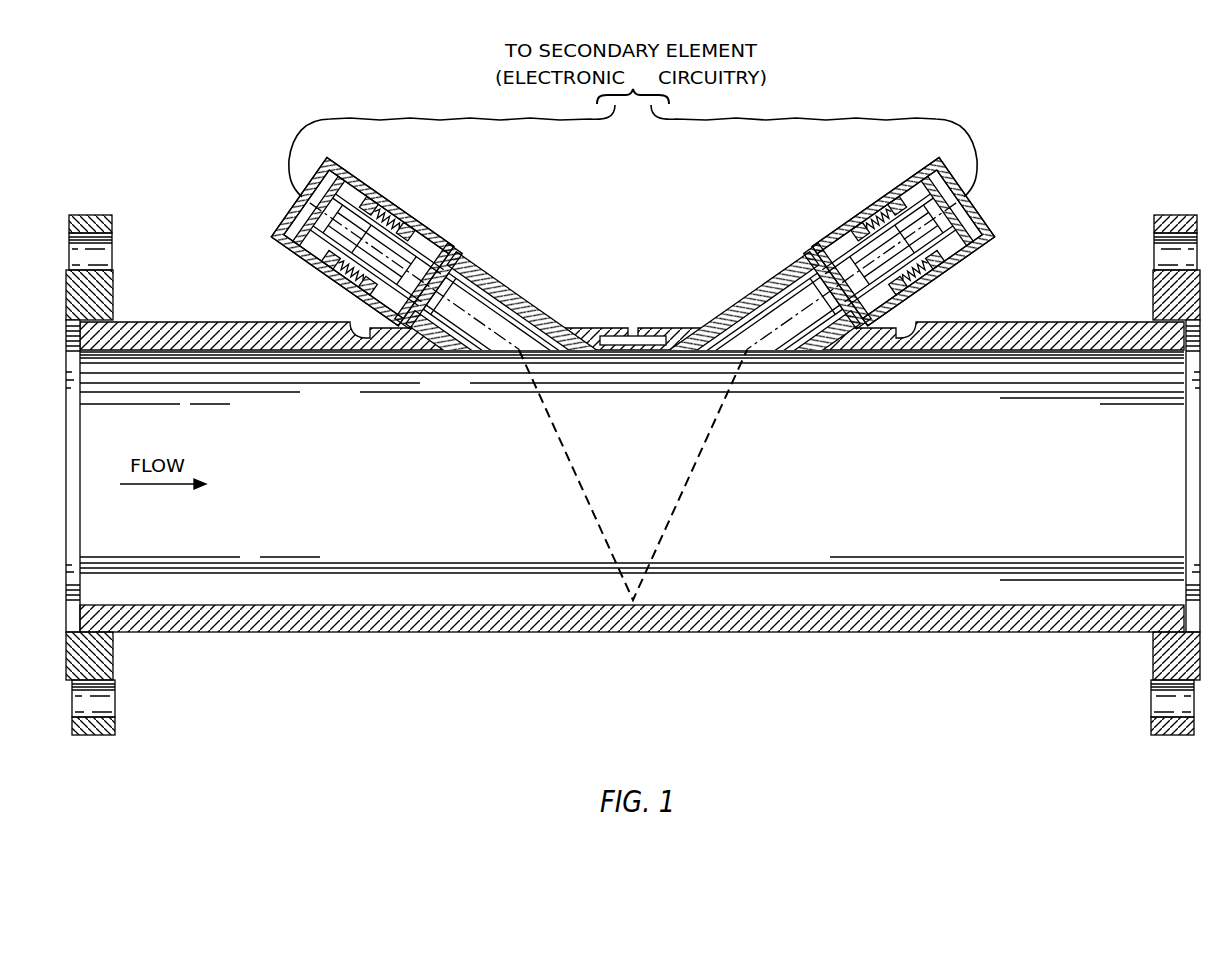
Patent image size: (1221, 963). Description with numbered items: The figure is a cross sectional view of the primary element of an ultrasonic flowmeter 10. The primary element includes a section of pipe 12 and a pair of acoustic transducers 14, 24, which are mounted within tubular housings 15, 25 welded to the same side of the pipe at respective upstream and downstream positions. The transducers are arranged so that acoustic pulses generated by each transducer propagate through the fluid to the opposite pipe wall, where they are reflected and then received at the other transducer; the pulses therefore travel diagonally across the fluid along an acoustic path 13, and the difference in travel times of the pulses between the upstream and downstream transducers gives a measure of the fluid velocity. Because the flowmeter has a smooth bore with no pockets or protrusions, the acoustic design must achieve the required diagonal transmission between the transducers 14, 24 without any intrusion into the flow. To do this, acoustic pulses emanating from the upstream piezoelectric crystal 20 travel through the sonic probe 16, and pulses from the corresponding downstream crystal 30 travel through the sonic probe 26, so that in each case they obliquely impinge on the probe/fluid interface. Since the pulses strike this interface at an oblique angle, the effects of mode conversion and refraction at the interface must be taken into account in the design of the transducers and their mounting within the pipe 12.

The ultrasonic flowmeter 10 is at (460, 640).
The section of pipe 12 is at (726, 640).
The acoustic path 13 is at (568, 463).
The acoustic transducer 14 is at (430, 239).
The tubular housing 15 is at (502, 290).
The sonic probe 16 is at (515, 330).
The upstream piezoelectric crystal 20 is at (457, 265).
The acoustic transducer 24 is at (836, 239).
The tubular housing 25 is at (764, 290).
The sonic probe 26 is at (751, 330).
The downstream crystal 30 is at (809, 265).